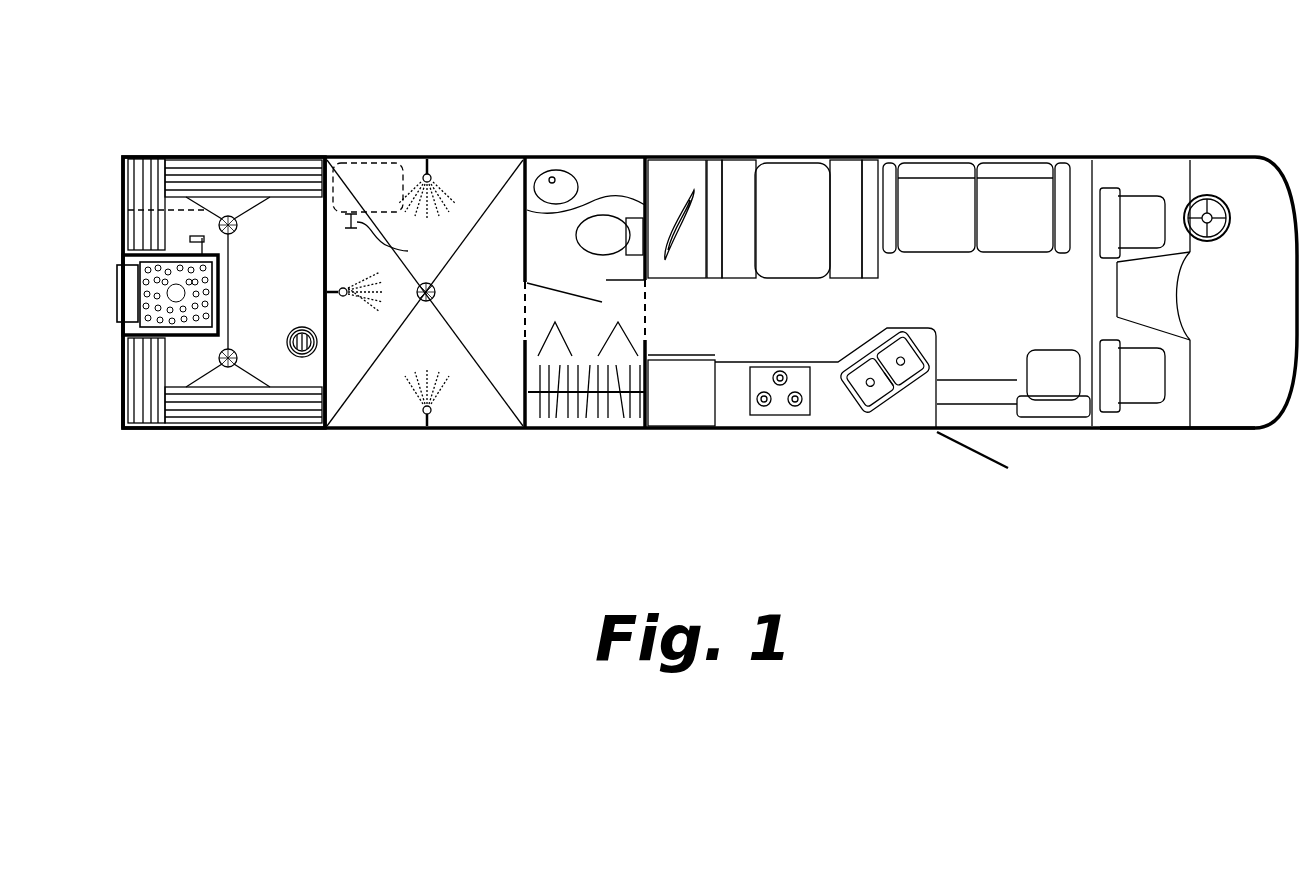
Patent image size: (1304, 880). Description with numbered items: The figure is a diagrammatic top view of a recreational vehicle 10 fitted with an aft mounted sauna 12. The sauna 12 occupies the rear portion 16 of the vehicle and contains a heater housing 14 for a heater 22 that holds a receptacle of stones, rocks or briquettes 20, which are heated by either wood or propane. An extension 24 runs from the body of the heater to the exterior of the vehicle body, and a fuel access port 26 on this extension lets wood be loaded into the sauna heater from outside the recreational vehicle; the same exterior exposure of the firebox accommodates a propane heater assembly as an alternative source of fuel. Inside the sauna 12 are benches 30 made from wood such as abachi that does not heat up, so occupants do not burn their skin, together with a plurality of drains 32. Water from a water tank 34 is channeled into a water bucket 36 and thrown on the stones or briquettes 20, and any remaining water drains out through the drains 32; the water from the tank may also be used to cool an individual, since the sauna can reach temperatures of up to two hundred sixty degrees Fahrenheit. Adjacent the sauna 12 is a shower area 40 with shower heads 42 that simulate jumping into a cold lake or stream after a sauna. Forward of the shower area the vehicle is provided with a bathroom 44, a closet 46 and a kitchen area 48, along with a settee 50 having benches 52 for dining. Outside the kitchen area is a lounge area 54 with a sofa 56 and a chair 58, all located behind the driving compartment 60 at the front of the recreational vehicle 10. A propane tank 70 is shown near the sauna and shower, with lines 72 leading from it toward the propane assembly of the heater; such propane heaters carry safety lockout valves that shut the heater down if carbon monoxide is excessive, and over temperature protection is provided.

The recreational vehicle 10 is at (1035, 152).
The sauna 12 is at (249, 155).
The heater housing 14 is at (178, 339).
The rear portion 16 is at (120, 398).
The stones, rocks or briquettes 20 is at (192, 325).
The heater 22 is at (175, 256).
The extension 24 is at (125, 290).
The fuel access port 26 is at (118, 280).
The benches 30 is at (272, 165).
The drains 32 is at (236, 232).
The water tank 34 is at (170, 162).
The water bucket 36 is at (300, 358).
The shower area 40 is at (468, 158).
The shower heads 42 is at (432, 178).
The bathroom 44 is at (591, 182).
The closet 46 is at (620, 412).
The kitchen area 48 is at (830, 398).
The settee 50 is at (781, 188).
The benches 52 is at (735, 262).
The lounge area 54 is at (1006, 155).
The sofa 56 is at (987, 224).
The chair 58 is at (1055, 360).
The driving compartment 60 is at (1160, 433).
The propane tank 70 is at (385, 157).
The lines 72 is at (408, 251).